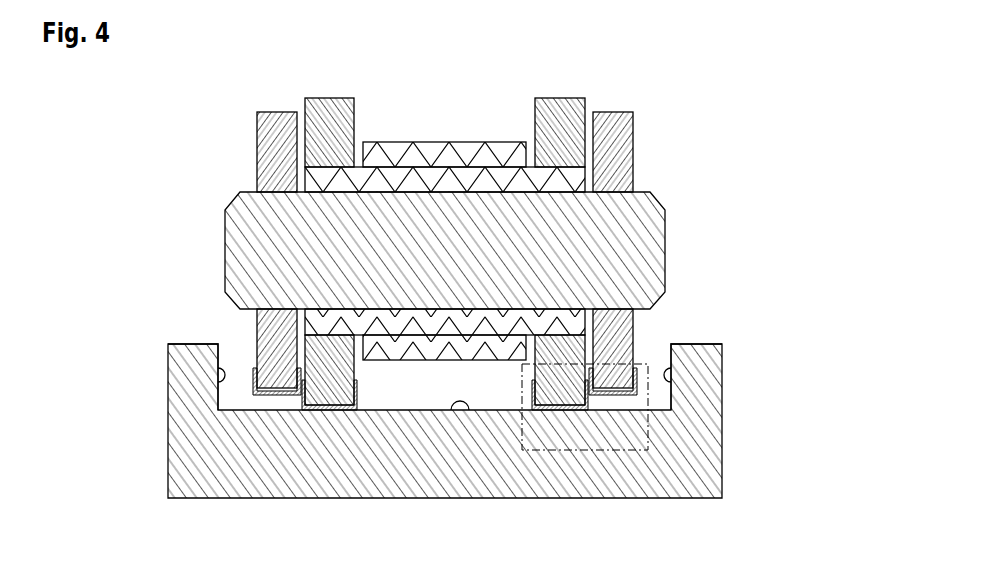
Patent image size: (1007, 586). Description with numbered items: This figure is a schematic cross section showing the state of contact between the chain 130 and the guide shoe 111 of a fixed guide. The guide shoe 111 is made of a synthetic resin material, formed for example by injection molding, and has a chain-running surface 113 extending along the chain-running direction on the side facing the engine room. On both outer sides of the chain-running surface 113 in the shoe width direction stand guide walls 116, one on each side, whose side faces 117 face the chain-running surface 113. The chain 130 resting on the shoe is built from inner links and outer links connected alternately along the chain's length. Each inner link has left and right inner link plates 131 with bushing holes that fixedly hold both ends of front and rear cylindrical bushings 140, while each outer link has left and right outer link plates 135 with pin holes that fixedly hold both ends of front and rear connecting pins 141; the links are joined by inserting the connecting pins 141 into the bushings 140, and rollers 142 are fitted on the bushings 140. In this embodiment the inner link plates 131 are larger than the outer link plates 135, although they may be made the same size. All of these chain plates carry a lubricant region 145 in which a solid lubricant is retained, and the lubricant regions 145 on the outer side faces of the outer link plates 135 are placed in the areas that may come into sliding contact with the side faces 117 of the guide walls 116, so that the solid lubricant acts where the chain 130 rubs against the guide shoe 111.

The guide shoe 111 is at (724, 432).
The chain-running surface 113 is at (468, 412).
The guide walls 116 is at (190, 345).
The side faces 117 is at (222, 378).
The chain 130 is at (429, 203).
The inner link plates 131 is at (332, 98).
The outer link plates 135 is at (270, 112).
The bushings 140 is at (463, 168).
The connecting pins 141 is at (655, 210).
The rollers 142 is at (408, 142).
The lubricant region 145 is at (268, 396).